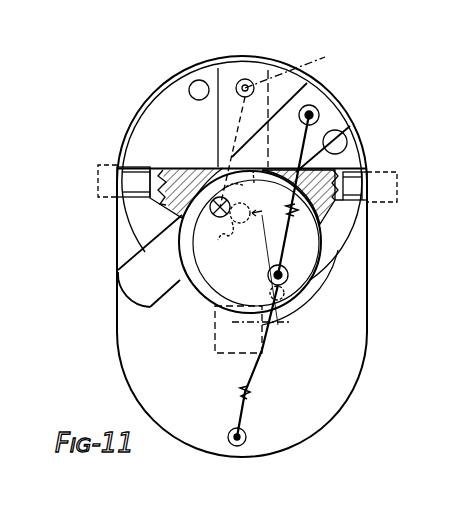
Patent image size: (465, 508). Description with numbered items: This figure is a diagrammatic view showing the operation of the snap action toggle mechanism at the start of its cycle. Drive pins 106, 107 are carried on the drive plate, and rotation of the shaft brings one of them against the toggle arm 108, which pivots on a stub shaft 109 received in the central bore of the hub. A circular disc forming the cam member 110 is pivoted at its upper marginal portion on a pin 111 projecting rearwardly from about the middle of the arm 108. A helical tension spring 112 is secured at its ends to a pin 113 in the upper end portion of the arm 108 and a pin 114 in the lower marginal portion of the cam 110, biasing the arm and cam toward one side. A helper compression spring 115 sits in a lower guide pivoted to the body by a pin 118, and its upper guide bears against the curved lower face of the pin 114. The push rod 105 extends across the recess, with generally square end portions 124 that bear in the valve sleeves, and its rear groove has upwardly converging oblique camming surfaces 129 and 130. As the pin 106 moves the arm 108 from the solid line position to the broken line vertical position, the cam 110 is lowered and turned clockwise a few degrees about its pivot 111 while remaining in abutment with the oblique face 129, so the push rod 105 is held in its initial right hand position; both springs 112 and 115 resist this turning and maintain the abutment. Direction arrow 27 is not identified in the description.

The direction arrow 27 is at (262, 217).
The push rod 105 is at (188, 170).
The drive pin 106 is at (342, 138).
The drive pin 107 is at (194, 81).
The toggle arm 108 is at (157, 232).
The stub shaft 109 is at (255, 117).
The cam member 110 is at (300, 258).
The pin 111 is at (206, 228).
The helical tension spring 112 is at (295, 240).
The pin 113 is at (316, 112).
The pin 114 is at (300, 272).
The compression spring 115 is at (238, 371).
The pin 118 is at (246, 432).
The end portions 124 is at (137, 163).
The camming surface 129 is at (322, 167).
The camming surface 130 is at (164, 166).